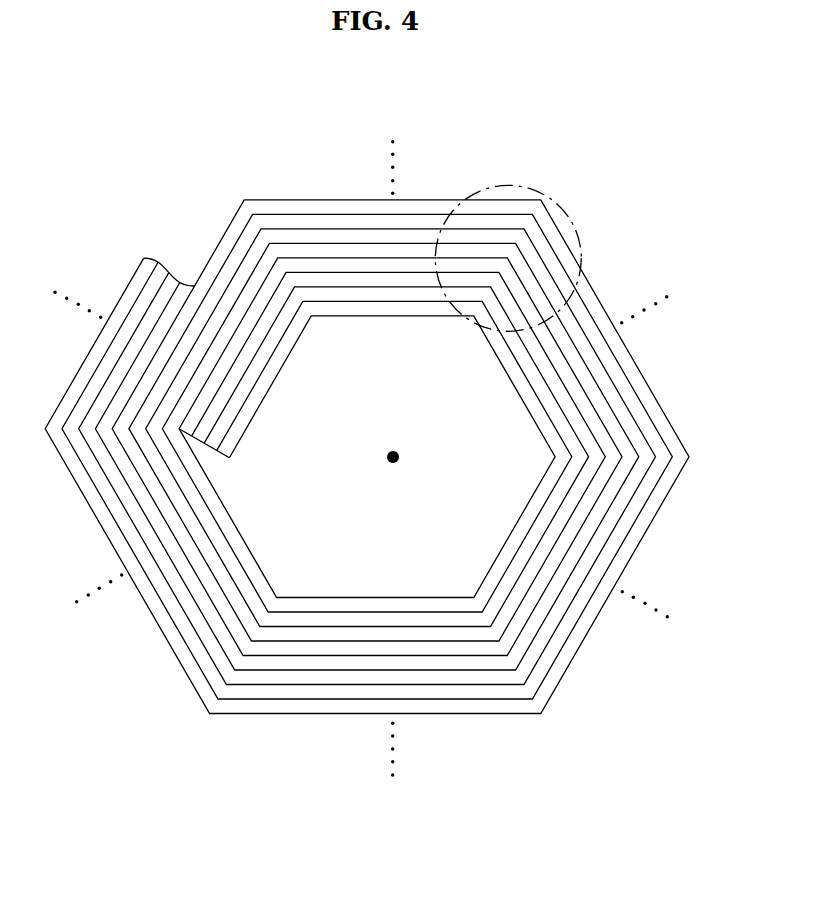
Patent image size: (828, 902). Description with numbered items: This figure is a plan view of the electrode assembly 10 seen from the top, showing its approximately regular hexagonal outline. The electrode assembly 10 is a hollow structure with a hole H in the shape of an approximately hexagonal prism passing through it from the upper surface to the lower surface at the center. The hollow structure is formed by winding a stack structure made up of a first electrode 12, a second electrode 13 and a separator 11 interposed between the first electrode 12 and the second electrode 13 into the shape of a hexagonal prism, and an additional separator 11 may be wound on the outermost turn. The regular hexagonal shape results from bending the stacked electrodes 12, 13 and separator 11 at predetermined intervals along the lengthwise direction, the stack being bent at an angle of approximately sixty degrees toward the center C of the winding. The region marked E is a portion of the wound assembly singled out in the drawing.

The electrode assembly 10 is at (296, 152).
The separator 11 is at (334, 316).
The first electrode 12 is at (367, 301).
The second electrode 13 is at (428, 272).
The enlarged region E is at (505, 185).
The hole H is at (466, 406).
The center C is at (384, 457).